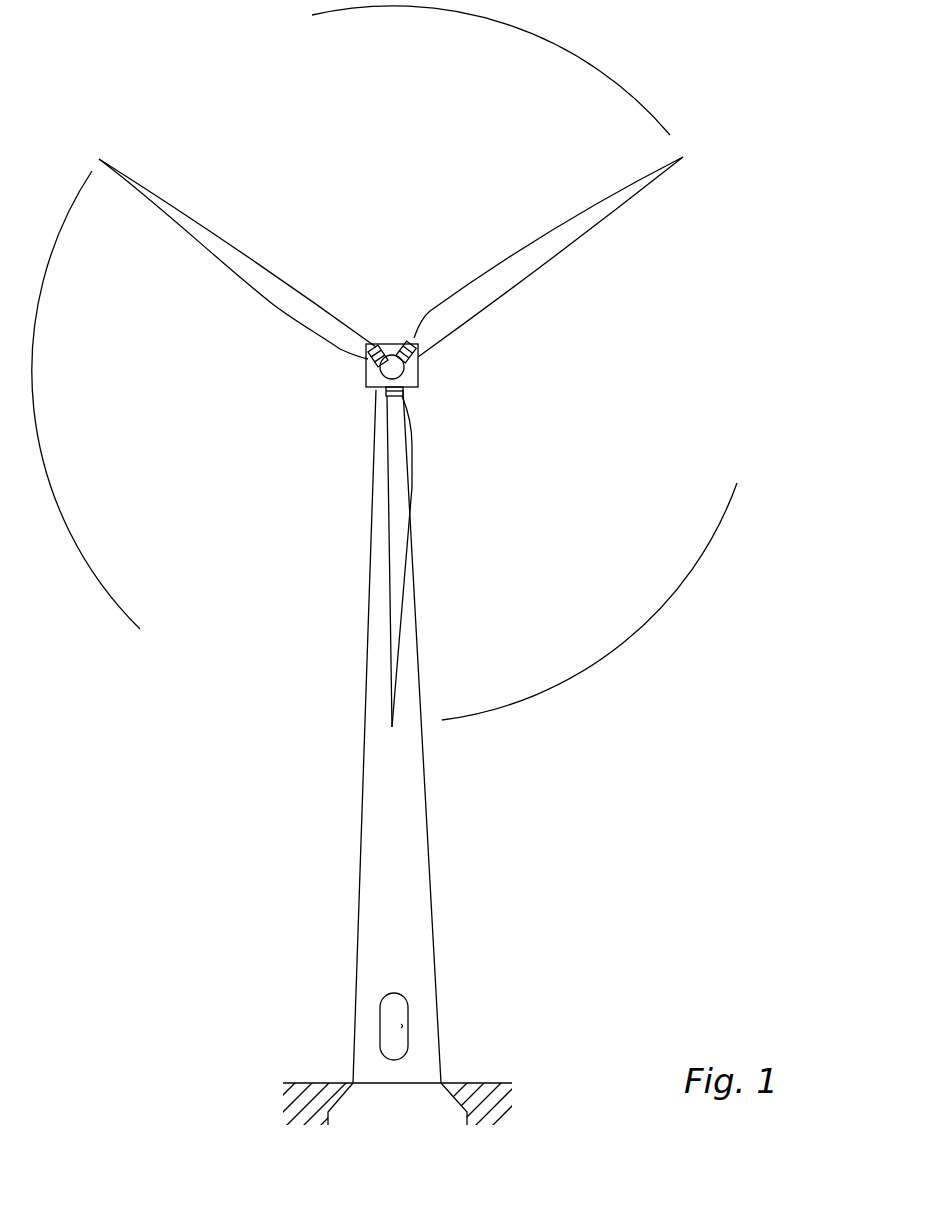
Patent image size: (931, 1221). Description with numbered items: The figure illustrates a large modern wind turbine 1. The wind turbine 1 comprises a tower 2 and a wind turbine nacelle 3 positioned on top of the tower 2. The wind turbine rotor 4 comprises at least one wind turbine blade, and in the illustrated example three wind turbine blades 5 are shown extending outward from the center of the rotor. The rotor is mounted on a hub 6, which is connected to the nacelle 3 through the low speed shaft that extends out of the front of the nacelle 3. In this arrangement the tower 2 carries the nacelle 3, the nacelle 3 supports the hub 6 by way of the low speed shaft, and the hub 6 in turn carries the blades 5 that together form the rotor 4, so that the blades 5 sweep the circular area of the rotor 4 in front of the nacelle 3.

The wind turbine 1 is at (336, 923).
The tower 2 is at (422, 808).
The wind turbine nacelle 3 is at (418, 388).
The wind turbine rotor 4 is at (642, 592).
The wind turbine blades 5 is at (395, 592).
The hub 6 is at (391, 358).